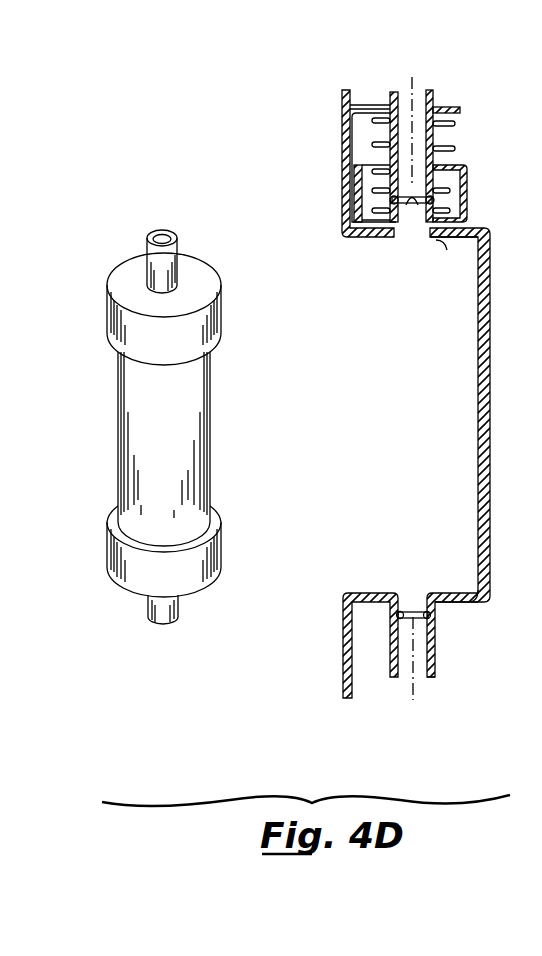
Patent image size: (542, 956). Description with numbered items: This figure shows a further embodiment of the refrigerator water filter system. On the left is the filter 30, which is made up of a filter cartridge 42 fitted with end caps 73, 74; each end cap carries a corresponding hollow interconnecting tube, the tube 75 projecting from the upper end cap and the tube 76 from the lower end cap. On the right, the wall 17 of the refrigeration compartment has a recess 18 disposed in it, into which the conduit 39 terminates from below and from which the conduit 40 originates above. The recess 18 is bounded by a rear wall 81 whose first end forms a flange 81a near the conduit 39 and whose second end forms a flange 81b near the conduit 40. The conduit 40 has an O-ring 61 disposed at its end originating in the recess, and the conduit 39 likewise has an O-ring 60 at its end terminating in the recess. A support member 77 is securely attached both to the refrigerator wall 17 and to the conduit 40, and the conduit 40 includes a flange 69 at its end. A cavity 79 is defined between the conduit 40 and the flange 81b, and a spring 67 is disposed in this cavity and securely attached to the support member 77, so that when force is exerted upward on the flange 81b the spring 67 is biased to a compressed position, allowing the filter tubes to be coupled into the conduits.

The filter 30 is at (149, 382).
The hollow interconnecting tube 75 is at (168, 233).
The end cap 73 is at (222, 312).
The filter cartridge 42 is at (214, 486).
The end cap 74 is at (223, 558).
The hollow interconnecting tube 76 is at (165, 622).
The recess 18 is at (344, 302).
The wall 17 is at (341, 146).
The support member 77 is at (372, 106).
The conduit 40 is at (433, 96).
The spring 67 is at (448, 148).
The flange 69 is at (462, 219).
The cavity 79 is at (452, 199).
The O-ring 61 is at (414, 206).
The rear wall 81 is at (491, 398).
The flange 81b is at (445, 239).
The flange 81a is at (462, 594).
The O-ring 60 is at (413, 611).
The conduit 39 is at (436, 652).